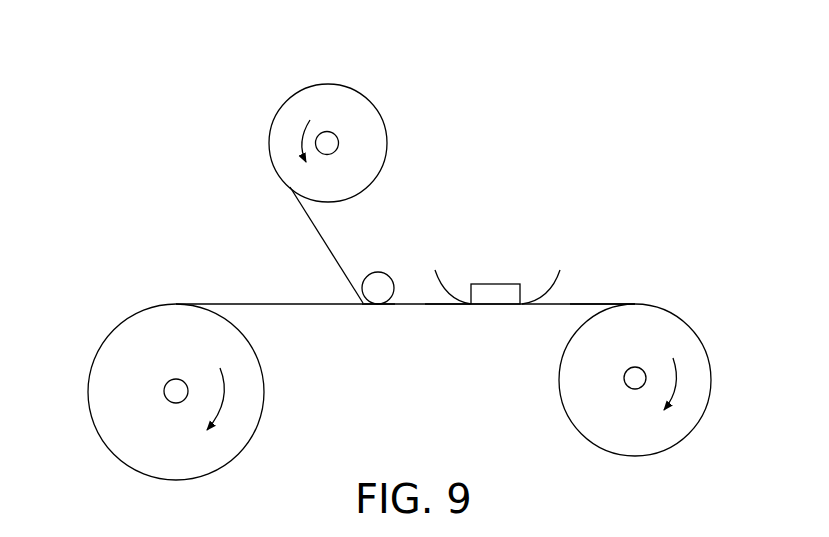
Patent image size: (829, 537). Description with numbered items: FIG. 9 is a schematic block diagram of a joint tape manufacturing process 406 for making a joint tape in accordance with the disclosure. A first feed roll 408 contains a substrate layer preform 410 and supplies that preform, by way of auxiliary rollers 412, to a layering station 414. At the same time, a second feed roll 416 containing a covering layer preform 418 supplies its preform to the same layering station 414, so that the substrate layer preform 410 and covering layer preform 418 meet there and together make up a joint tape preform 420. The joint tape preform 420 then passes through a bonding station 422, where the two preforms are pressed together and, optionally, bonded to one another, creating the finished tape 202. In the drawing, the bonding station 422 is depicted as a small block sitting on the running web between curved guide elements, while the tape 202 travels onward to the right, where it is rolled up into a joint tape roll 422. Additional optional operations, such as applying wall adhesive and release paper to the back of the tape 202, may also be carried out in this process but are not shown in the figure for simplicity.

The tape 202 is at (587, 304).
The joint tape manufacturing process 406 is at (626, 169).
The first feed roll 408 is at (379, 101).
The substrate layer preform 410 is at (335, 252).
The auxiliary rollers 412 is at (387, 272).
The layering station 414 is at (377, 322).
The second feed roll 416 is at (87, 336).
The covering layer preform 418 is at (245, 303).
The joint tape preform 420 is at (438, 307).
The bonding station 422 is at (498, 284).